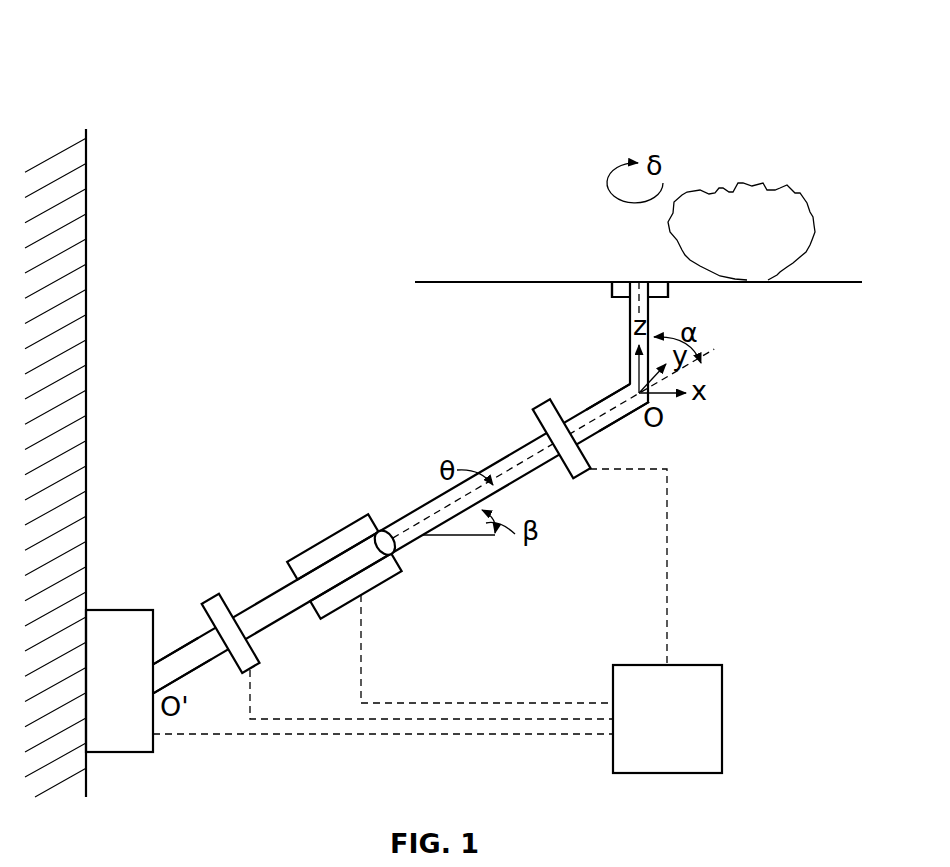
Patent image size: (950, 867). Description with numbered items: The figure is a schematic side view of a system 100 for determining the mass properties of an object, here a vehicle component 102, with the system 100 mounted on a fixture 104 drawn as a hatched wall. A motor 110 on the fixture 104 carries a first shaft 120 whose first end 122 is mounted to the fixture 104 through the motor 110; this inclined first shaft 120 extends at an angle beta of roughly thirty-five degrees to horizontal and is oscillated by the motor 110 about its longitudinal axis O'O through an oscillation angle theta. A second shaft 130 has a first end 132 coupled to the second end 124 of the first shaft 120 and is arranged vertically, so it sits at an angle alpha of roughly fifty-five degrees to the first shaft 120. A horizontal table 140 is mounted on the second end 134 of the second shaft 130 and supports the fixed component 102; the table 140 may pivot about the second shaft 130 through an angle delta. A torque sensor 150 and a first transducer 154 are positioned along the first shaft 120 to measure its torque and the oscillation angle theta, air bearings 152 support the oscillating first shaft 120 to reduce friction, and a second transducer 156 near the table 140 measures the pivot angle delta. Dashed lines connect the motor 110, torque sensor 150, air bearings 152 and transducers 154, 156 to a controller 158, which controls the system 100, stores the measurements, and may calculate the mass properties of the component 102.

The system 100 is at (113, 53).
The vehicle component 102 is at (800, 207).
The fixture 104 is at (89, 382).
The motor 110 is at (122, 608).
The first shaft 120 is at (270, 592).
The first end 122 is at (190, 640).
The second end 124 is at (614, 389).
The second shaft 130 is at (626, 321).
The first end 132 is at (652, 303).
The second end 134 is at (642, 283).
The table 140 is at (490, 281).
The torque sensor 150 is at (211, 598).
The air bearings 152 is at (380, 583).
The first transducer 154 is at (545, 403).
The second transducer 156 is at (612, 292).
The controller 158 is at (722, 720).